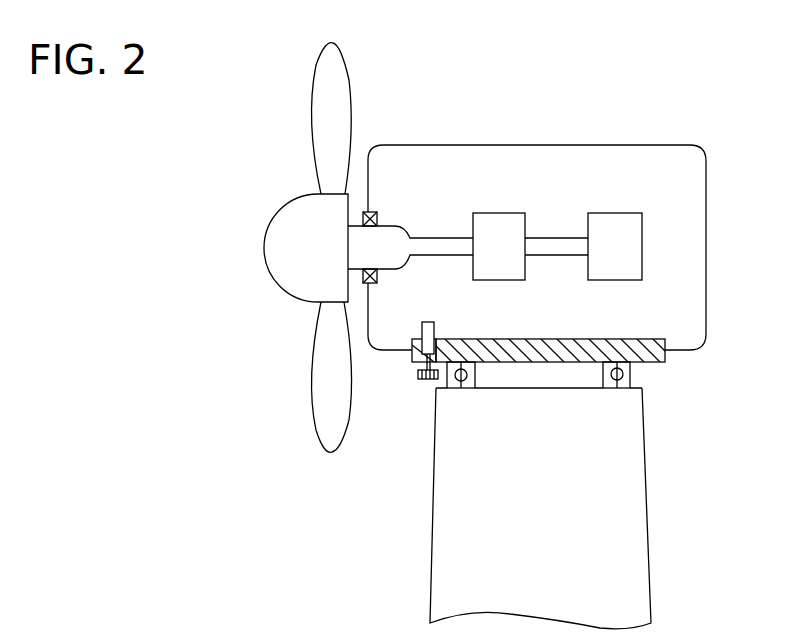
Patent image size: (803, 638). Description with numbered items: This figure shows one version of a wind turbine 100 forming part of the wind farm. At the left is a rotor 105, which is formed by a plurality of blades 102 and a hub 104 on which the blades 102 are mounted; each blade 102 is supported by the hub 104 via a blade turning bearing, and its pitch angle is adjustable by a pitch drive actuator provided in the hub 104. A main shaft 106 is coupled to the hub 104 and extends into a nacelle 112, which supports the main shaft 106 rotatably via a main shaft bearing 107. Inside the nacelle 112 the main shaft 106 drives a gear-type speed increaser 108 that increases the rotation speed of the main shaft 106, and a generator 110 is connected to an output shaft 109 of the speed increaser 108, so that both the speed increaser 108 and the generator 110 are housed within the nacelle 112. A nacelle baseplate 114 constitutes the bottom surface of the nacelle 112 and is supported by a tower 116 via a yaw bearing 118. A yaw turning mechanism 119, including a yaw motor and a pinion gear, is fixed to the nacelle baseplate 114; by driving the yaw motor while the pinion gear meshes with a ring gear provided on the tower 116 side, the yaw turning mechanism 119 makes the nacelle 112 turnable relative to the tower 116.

The wind turbine 100 is at (764, 81).
The blades 102 is at (311, 87).
The hub 104 is at (277, 211).
The rotor 105 is at (214, 137).
The main shaft 106 is at (452, 237).
The main shaft bearing 107 is at (379, 216).
The speed increaser 108 is at (503, 212).
The output shaft 109 is at (546, 237).
The generator 110 is at (620, 212).
The nacelle 112 is at (707, 233).
The nacelle baseplate 114 is at (511, 363).
The tower 116 is at (650, 470).
The yaw bearing 118 is at (632, 380).
The yaw turning mechanism 119 is at (437, 326).